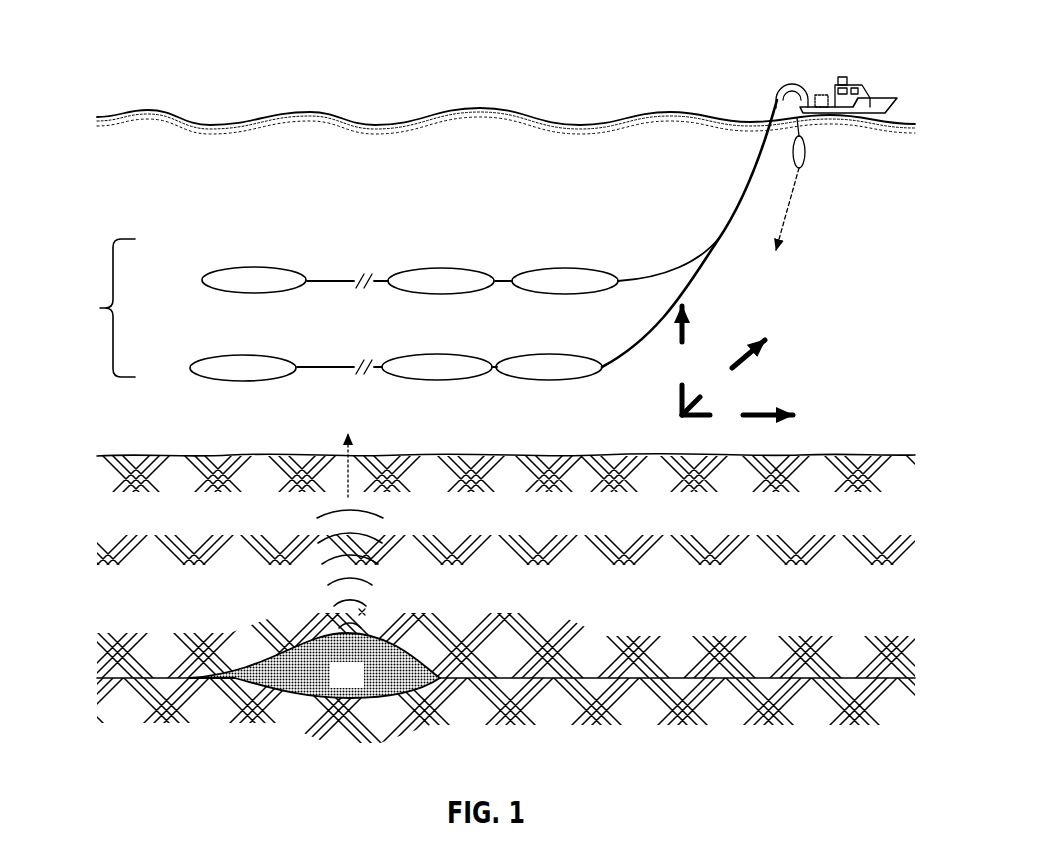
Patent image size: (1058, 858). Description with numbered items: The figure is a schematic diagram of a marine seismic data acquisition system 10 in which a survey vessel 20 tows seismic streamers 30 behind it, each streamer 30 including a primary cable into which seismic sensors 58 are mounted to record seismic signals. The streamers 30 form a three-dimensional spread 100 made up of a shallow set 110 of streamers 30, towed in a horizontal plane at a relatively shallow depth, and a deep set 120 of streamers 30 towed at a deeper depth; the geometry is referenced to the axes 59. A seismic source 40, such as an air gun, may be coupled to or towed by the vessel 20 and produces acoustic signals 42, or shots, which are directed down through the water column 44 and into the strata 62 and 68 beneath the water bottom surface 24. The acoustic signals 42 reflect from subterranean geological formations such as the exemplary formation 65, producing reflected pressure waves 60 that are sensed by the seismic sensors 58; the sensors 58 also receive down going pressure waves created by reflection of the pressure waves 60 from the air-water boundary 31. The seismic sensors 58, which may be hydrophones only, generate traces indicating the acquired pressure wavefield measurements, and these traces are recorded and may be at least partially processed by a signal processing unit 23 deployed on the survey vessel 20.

The marine seismic data acquisition system 10 is at (296, 78).
The survey vessel 20 is at (893, 97).
The signal processing unit 23 is at (820, 94).
The water bottom surface 24 is at (802, 454).
The seismic streamers 30 is at (745, 197).
The air-water boundary 31 is at (455, 110).
The seismic source 40 is at (806, 152).
The acoustic signal 42 is at (790, 200).
The water column 44 is at (831, 309).
The seismic sensors 58 is at (264, 268).
The axes 59 is at (672, 424).
The pressure waves 60 is at (307, 592).
The strata 62 is at (510, 654).
The formation 65 is at (360, 684).
The strata 68 is at (510, 724).
The three-dimensional spread 100 is at (389, 307).
The shallow set of streamers 110 is at (194, 279).
The deep set of streamers 120 is at (189, 360).